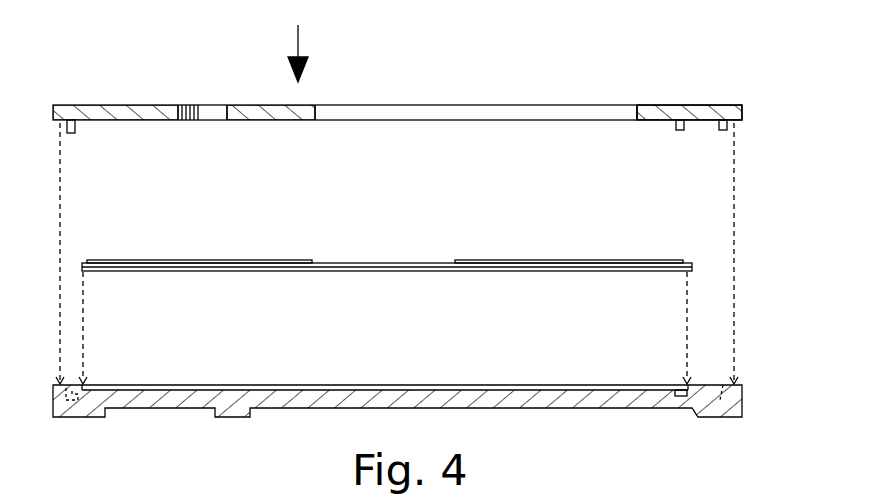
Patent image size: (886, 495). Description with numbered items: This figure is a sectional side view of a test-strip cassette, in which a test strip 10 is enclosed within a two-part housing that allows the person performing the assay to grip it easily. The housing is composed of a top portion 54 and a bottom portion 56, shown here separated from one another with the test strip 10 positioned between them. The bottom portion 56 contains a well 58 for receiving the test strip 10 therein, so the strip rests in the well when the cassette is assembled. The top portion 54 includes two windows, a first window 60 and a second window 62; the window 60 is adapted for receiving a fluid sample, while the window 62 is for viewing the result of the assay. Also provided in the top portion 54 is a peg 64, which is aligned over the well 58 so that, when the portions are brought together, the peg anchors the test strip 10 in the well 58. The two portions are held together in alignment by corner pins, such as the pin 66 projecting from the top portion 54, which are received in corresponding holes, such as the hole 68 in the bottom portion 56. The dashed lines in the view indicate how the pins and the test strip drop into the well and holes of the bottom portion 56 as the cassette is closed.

The test strip 10 is at (699, 265).
The top portion 54 is at (740, 112).
The bottom portion 56 is at (742, 395).
The well 58 is at (110, 386).
The window 60 is at (195, 104).
The window 62 is at (637, 104).
The peg 64 is at (680, 131).
The pin 66 is at (725, 131).
The hole 68 is at (723, 385).